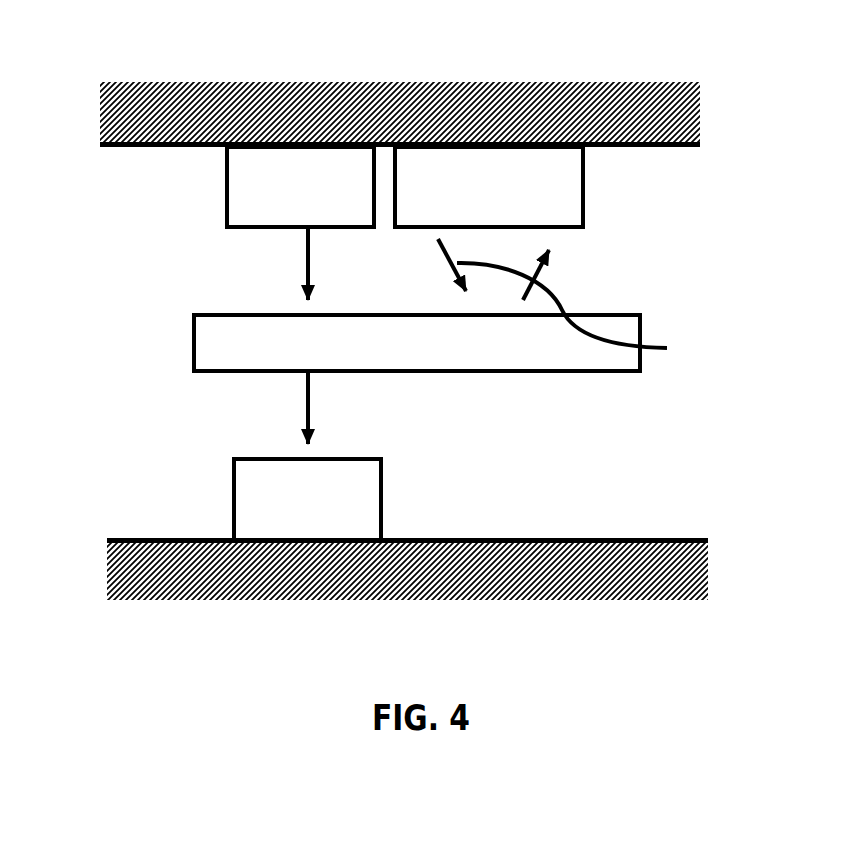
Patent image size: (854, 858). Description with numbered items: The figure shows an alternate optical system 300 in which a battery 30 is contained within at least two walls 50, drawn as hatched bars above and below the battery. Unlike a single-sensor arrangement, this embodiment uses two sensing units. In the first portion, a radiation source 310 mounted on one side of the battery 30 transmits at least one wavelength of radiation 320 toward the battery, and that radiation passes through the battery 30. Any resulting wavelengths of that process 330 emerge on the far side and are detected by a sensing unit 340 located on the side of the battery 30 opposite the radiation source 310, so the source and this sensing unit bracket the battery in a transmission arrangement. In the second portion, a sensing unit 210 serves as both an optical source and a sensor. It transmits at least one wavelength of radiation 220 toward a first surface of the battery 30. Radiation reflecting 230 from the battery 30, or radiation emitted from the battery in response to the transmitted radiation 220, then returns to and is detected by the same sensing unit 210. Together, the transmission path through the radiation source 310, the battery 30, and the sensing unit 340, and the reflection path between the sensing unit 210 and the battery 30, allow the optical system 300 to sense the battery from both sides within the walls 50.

The optical system 300 is at (157, 52).
The walls 50 is at (400, 83).
The radiation source 310 is at (300, 187).
The sensing unit 210 is at (489, 187).
The battery 30 is at (417, 343).
The sensing unit 340 is at (307, 499).
The wavelength of radiation 320 is at (305, 277).
The resulting wavelengths 330 is at (305, 420).
The reflecting radiation 230 is at (535, 272).
The transmitted radiation 220 is at (593, 314).